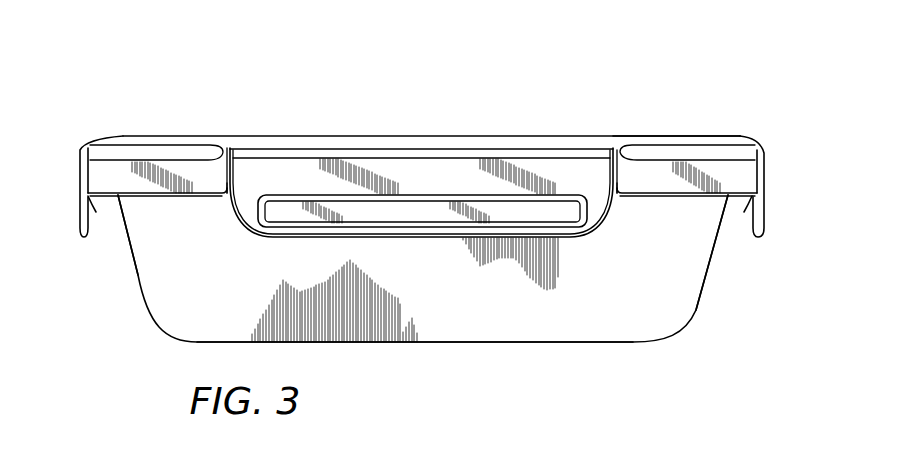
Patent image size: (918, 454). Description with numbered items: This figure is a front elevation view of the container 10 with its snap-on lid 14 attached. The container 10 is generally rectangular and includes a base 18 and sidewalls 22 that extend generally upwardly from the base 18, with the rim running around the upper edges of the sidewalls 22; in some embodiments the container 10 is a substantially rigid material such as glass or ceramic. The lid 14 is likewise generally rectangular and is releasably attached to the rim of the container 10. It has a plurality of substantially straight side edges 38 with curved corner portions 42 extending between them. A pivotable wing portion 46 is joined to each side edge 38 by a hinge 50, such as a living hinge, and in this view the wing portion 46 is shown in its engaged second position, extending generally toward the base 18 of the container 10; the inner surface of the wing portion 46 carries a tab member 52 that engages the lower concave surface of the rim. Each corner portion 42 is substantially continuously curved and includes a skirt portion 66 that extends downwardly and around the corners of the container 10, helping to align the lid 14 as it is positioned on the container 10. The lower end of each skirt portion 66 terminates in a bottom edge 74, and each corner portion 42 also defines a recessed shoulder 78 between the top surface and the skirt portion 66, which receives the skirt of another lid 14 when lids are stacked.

The container 10 is at (667, 292).
The snap-on lid 14 is at (643, 142).
The base 18 is at (528, 342).
The sidewalls 22 is at (138, 280).
The side edges 38 is at (280, 145).
The corner portions 42 is at (142, 142).
The pivotable wing portion 46 is at (78, 200).
The hinge 50 is at (438, 150).
The tab member 52 is at (98, 200).
The skirt portion 66 is at (188, 182).
The bottom edge 74 is at (145, 195).
The recessed shoulder 78 is at (172, 157).